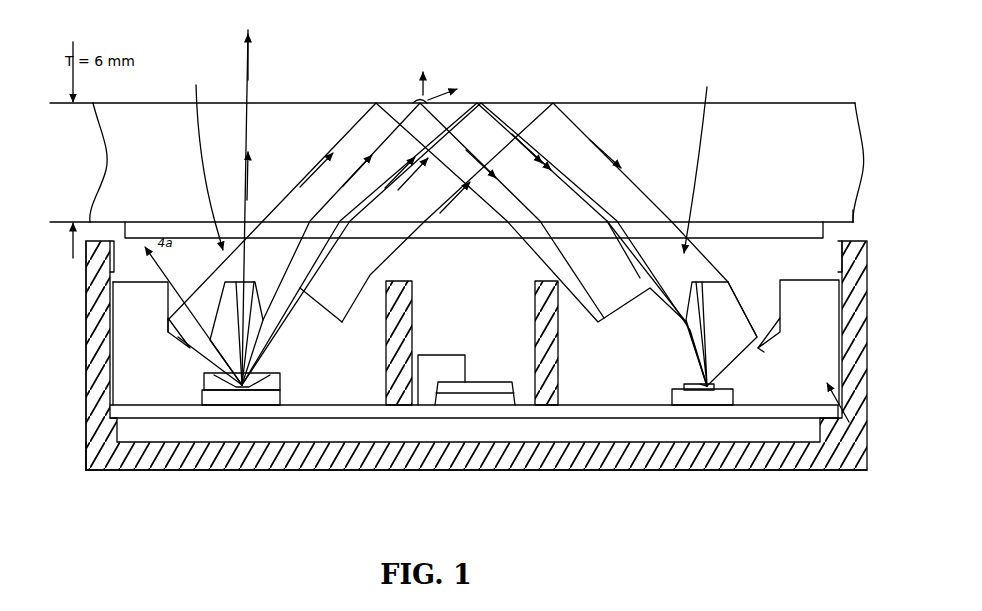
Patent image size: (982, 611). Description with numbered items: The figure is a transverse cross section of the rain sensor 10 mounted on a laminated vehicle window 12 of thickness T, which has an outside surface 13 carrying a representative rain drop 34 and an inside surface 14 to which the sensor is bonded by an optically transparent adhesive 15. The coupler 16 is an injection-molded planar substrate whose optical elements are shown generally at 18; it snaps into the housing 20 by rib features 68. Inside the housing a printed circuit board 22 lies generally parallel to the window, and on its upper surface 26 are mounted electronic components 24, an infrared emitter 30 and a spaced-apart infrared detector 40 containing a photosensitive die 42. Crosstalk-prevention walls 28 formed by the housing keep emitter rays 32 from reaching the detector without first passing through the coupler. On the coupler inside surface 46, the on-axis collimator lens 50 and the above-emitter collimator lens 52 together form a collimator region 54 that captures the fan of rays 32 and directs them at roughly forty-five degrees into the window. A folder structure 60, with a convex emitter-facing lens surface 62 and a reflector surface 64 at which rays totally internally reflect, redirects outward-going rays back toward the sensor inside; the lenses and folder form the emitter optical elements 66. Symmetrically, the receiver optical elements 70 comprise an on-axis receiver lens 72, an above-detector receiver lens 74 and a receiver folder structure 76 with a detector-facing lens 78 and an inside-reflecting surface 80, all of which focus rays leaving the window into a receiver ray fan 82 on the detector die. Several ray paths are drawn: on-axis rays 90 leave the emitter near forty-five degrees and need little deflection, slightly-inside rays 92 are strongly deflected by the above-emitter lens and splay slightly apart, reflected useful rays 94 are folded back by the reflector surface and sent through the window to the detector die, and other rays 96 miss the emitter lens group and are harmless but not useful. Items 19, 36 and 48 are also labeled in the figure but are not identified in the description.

The rain sensor 10 is at (84, 507).
The vehicle window 12 is at (137, 116).
The outside surface 13 is at (748, 103).
The inside surface 14 is at (120, 224).
The optically transparent adhesive 15 is at (826, 230).
The coupler piece 16 is at (86, 313).
The optical elements 18 is at (140, 351).
The housing corner 19 is at (860, 427).
The housing 20 is at (228, 471).
The printed circuit board 22 is at (801, 412).
The electronic components 24 is at (479, 366).
The upper surface 26 is at (126, 404).
The crosstalk-prevention walls 28 is at (414, 301).
The infrared emitter 30 is at (201, 388).
The emitter rays 32 is at (202, 356).
The rain drop 34 is at (407, 98).
The light leaving glass 36 is at (440, 79).
The infrared detector 40 is at (732, 390).
The photosensitive die 42 is at (684, 389).
The inside surface 46 is at (808, 282).
The light ray 48 is at (360, 303).
The on-axis collimator lens 50 is at (302, 292).
The above-emitter collimator lens 52 is at (251, 316).
The collimator region 54 is at (296, 350).
The folder structure 60 is at (168, 326).
The emitter-facing lens surface 62 is at (210, 338).
The reflector surface 64 is at (168, 292).
The emitter optical elements 66 is at (205, 162).
The rib features 68 is at (864, 258).
The receiver optical elements 70 is at (698, 158).
The on-axis receiver lens 72 is at (633, 309).
The above-detector receiver lens 74 is at (695, 286).
The receiver folder structure 76 is at (752, 317).
The detector-facing lens 78 is at (752, 346).
The inside-reflecting surface 80 is at (780, 307).
The receiver ray fan 82 is at (633, 360).
The on-axis rays 90 is at (378, 218).
The slightly-inside rays 92 is at (353, 178).
The reflected useful rays 94 is at (312, 176).
The other rays 96 is at (265, 207).